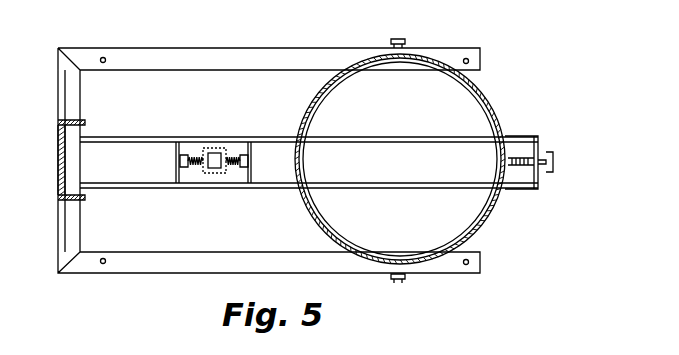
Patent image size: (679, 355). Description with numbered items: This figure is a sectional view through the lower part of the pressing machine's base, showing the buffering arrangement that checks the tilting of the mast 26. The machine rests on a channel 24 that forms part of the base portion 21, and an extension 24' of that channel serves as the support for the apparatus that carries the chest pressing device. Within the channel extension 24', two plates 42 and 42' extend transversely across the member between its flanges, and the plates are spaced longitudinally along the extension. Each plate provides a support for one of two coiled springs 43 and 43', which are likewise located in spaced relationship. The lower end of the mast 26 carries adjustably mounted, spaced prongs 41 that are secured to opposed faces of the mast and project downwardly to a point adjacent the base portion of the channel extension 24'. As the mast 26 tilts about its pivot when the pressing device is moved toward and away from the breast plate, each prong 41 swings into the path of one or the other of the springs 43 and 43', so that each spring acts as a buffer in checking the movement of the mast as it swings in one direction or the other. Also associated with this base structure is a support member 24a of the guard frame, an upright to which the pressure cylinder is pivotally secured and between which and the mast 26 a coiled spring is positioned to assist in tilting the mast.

The base portion 21 is at (502, 98).
The channel 24 is at (269, 166).
The support member 24a is at (70, 200).
The channel extension 24' is at (309, 150).
The mast 26 is at (213, 147).
The prongs 41 is at (214, 170).
The plate 42 is at (160, 178).
The plate 42' is at (262, 179).
The coiled spring 43 is at (190, 140).
The coiled spring 43' is at (238, 142).